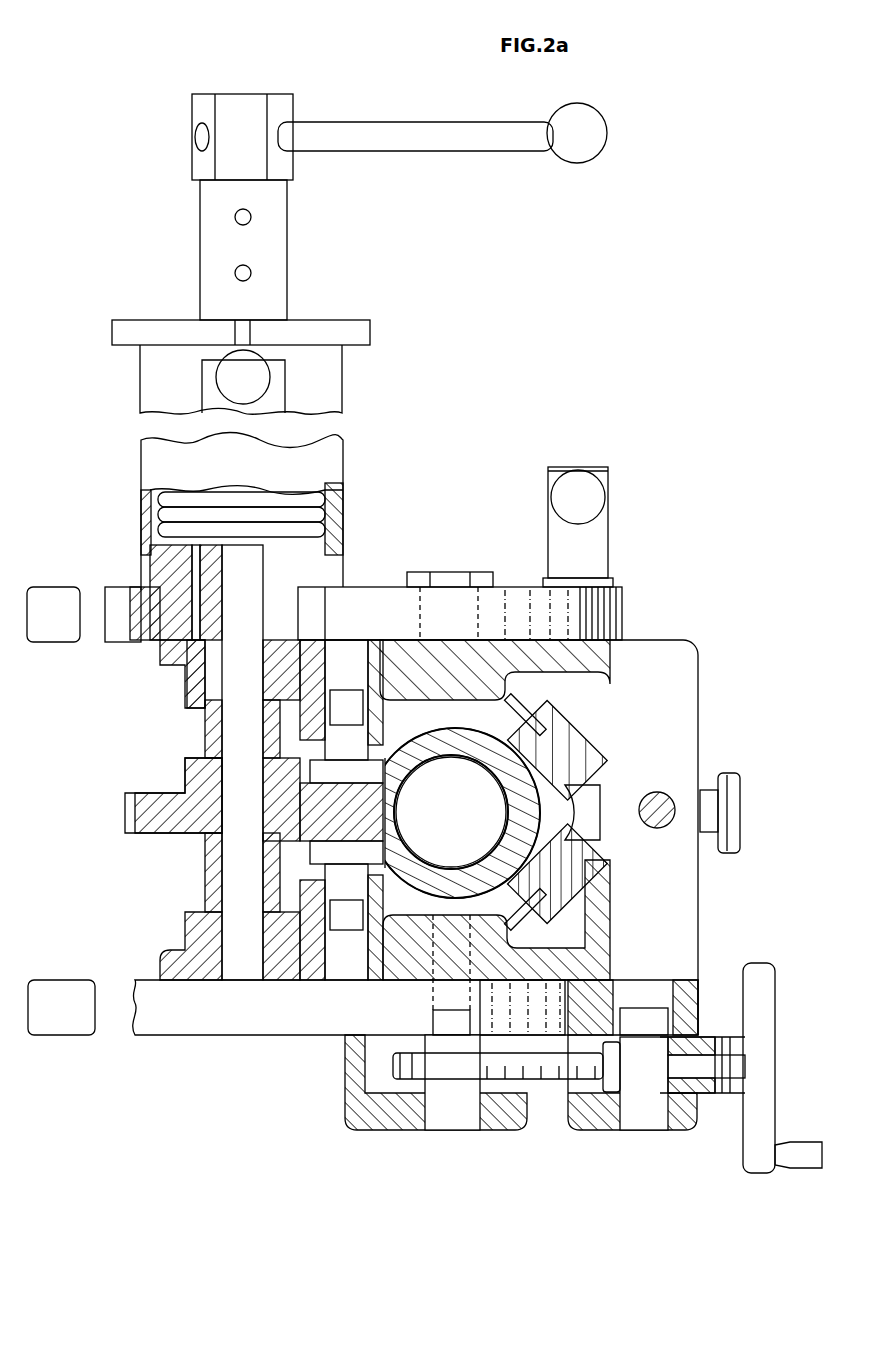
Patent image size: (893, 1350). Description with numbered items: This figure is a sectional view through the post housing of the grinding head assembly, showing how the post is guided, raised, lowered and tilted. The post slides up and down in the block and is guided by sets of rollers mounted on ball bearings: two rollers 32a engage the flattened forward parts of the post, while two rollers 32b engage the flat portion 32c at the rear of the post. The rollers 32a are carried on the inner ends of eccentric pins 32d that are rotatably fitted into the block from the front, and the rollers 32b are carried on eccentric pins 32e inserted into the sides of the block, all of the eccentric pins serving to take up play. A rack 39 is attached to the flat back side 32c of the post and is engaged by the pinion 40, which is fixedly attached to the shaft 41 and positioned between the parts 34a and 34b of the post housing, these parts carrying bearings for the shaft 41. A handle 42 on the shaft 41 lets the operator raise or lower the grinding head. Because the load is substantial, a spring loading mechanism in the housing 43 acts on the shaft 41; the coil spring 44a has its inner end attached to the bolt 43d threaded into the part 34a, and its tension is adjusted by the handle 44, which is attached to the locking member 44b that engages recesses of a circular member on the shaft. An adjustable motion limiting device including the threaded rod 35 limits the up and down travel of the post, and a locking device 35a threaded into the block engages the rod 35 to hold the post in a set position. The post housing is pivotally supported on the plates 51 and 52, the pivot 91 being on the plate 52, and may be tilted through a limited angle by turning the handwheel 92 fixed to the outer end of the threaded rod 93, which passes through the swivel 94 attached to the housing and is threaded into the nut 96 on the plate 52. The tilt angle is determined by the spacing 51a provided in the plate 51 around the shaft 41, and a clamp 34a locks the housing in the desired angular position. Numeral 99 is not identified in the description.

The rollers 32a is at (530, 712).
The rollers 32b is at (385, 776).
The flat portion 32c is at (387, 808).
The eccentric pins 32d is at (592, 778).
The eccentric pins 32e is at (340, 716).
The part of the housing 34a is at (603, 540).
The part of the housing 34b is at (162, 958).
The threaded rod 35 is at (670, 824).
The locking device 35a is at (740, 830).
The rack 39 is at (385, 822).
The pinion 40 is at (158, 793).
The shaft 41 is at (287, 250).
The handle 42 is at (447, 152).
The housing 43 is at (340, 532).
The bolt 43d is at (192, 566).
The handle 44 is at (263, 381).
The coil spring 44a is at (325, 498).
The locking member 44b is at (243, 330).
The plate 51 is at (390, 595).
The spacing 51a is at (172, 598).
The plate 52 is at (232, 1028).
The pivot 91 is at (430, 982).
The handwheel 92 is at (766, 1040).
The threaded rod 93 is at (540, 1075).
The swivel 94 is at (647, 1078).
The nut 96 is at (455, 1082).
The scale 99 is at (455, 603).